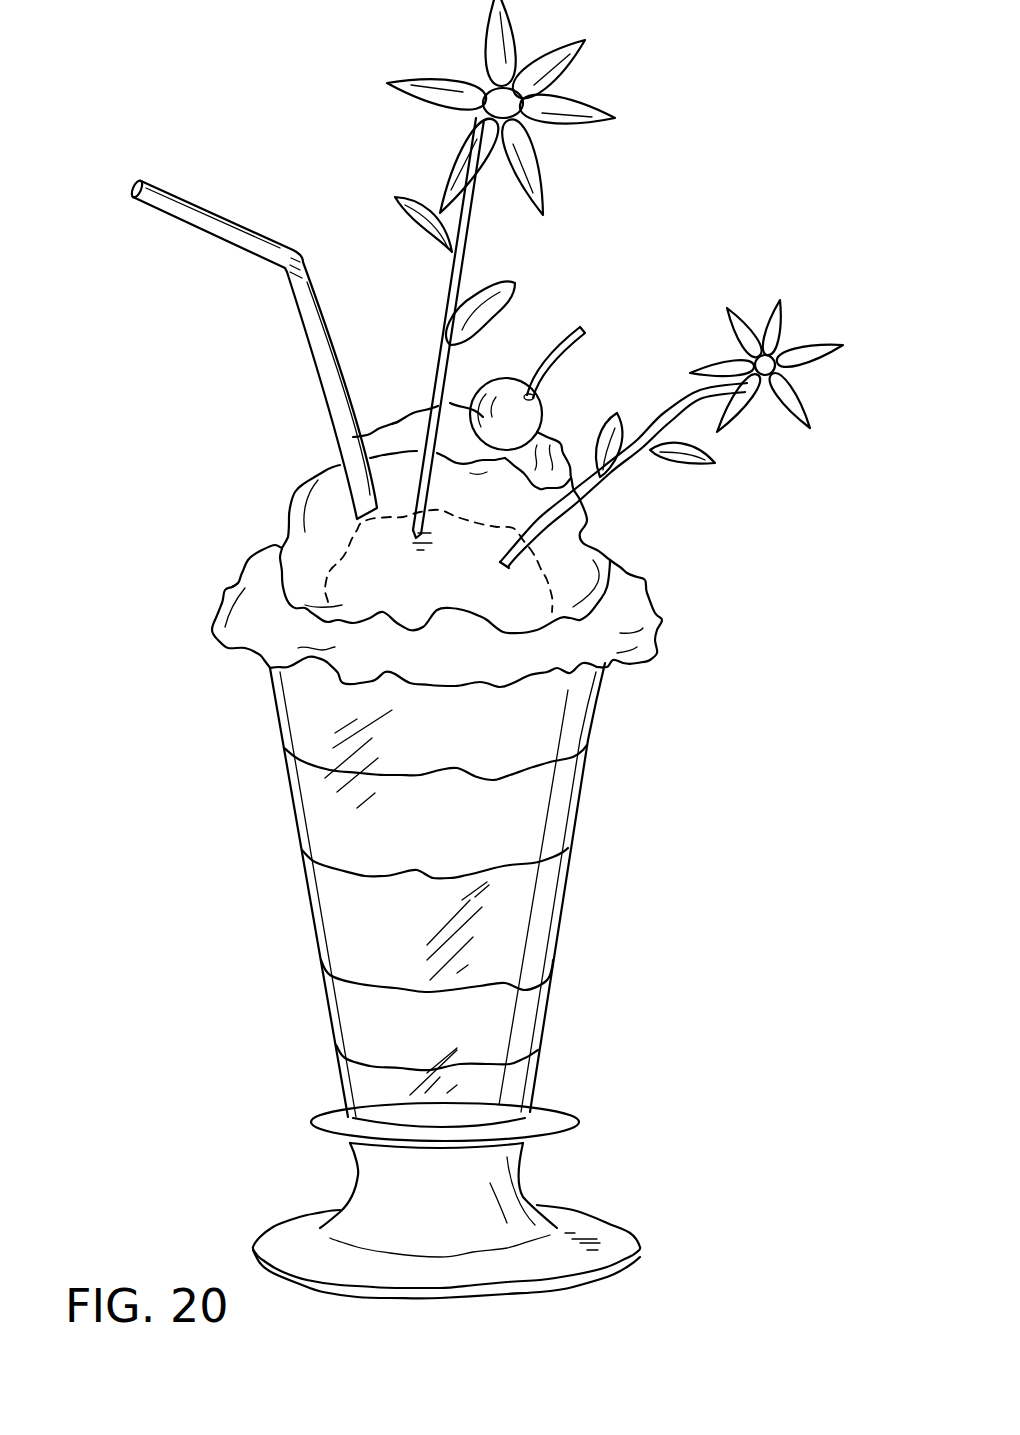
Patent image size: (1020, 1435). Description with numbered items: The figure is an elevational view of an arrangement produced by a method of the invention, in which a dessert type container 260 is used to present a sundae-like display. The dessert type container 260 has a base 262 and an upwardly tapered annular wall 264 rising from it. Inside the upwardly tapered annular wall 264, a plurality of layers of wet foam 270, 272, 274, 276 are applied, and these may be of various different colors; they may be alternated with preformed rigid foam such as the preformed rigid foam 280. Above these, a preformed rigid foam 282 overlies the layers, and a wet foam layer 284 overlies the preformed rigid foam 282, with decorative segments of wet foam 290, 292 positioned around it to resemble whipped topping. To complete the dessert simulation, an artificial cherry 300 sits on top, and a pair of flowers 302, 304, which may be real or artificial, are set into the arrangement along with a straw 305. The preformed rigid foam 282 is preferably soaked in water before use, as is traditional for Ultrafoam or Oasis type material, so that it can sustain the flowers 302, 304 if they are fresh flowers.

The dessert type container 260 is at (426, 980).
The base 262 is at (517, 1200).
The upwardly tapered annular wall 264 is at (558, 943).
The layer of wet foam 270 is at (362, 1080).
The layer of wet foam 272 is at (337, 929).
The layer of wet foam 274 is at (317, 832).
The layer of wet foam 276 is at (290, 712).
The preformed rigid foam 280 is at (350, 1017).
The preformed rigid foam 282 is at (606, 582).
The wet foam layer 284 is at (578, 537).
The decorative segment of wet foam 290 is at (257, 591).
The decorative segment of wet foam 292 is at (399, 424).
The artificial cherry 300 is at (537, 405).
The flower 302 is at (731, 312).
The flower 304 is at (452, 276).
The straw 305 is at (240, 242).